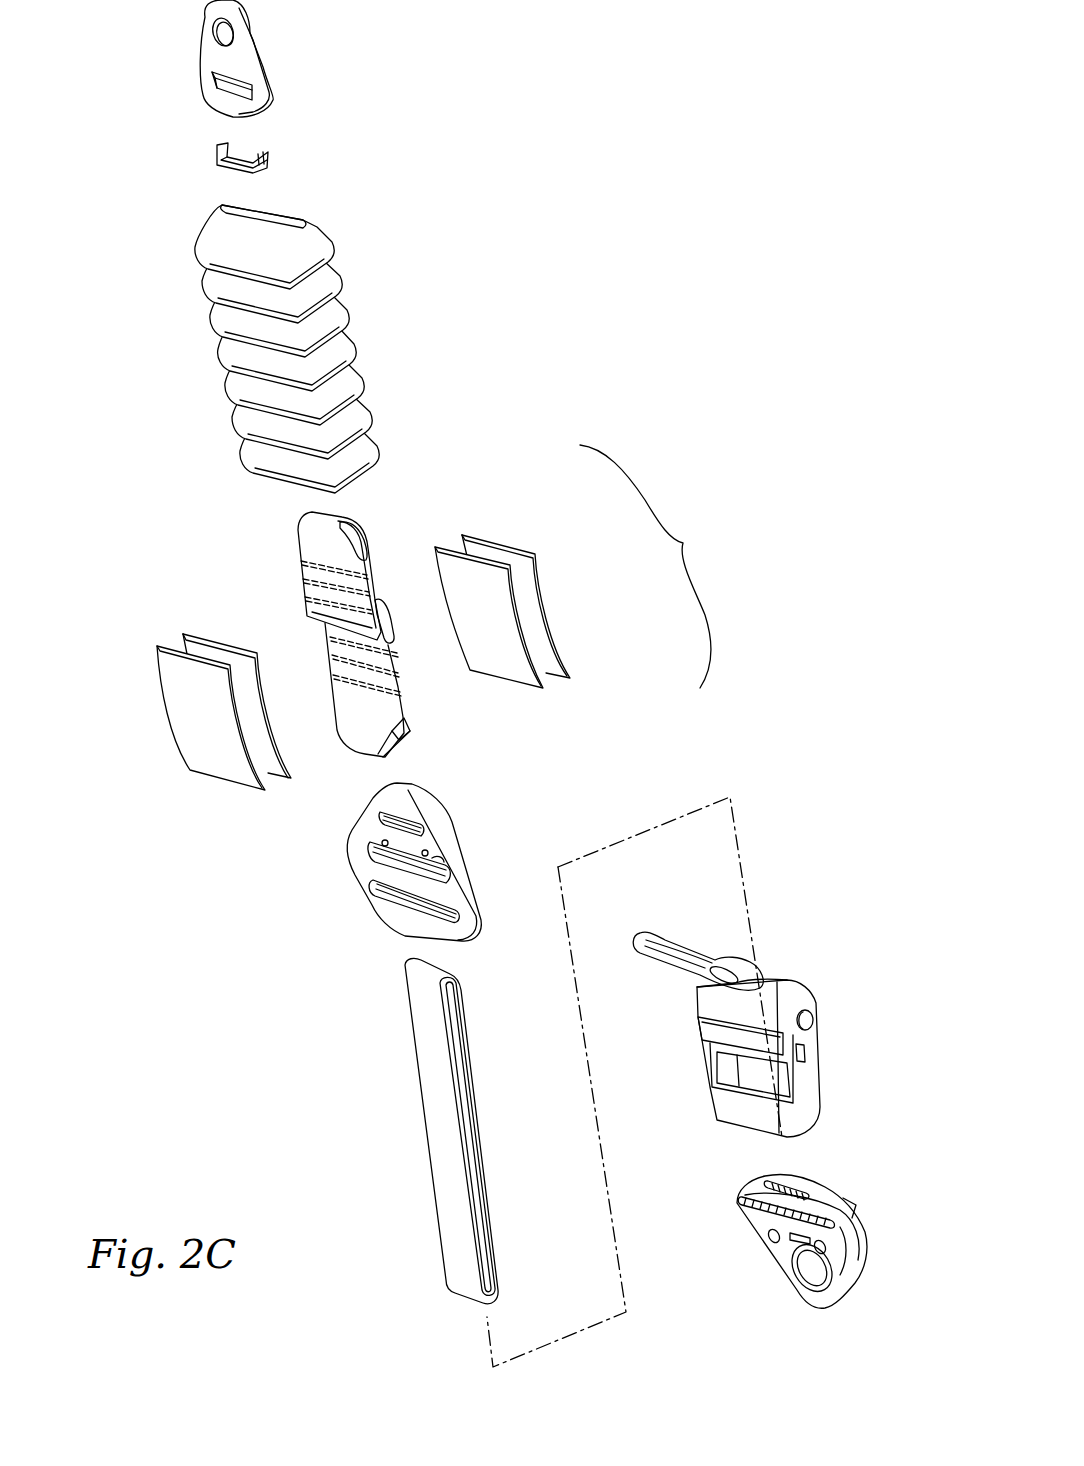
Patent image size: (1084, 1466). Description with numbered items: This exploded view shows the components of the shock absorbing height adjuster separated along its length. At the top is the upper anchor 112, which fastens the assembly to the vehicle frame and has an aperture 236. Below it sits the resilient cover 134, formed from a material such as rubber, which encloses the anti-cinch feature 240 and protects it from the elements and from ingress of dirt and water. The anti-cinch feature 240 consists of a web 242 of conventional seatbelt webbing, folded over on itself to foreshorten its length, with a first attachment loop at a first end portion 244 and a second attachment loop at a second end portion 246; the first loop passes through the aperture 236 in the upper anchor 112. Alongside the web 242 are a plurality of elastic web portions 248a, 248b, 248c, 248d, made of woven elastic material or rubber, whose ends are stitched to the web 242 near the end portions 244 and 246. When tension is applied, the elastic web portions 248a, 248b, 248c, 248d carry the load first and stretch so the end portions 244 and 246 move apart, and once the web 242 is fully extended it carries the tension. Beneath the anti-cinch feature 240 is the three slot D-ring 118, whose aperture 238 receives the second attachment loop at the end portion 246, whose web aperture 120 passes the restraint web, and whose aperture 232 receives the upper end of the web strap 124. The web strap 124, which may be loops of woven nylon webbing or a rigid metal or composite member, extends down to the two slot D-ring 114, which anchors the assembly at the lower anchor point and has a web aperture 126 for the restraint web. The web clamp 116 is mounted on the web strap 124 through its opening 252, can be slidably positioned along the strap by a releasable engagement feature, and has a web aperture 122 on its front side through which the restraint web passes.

The upper anchor 112 is at (243, 67).
The aperture 236 is at (215, 86).
The cover 134 is at (357, 392).
The anti-cinch feature 240 is at (683, 543).
The first end portion 244 is at (316, 524).
The web 242 is at (364, 674).
The second end portion 246 is at (415, 744).
The elastic web portion 248a is at (174, 704).
The elastic web portion 248b is at (188, 645).
The elastic web portion 248c is at (518, 667).
The elastic web portion 248d is at (552, 640).
The three slot D-ring 118 is at (399, 881).
The aperture 238 is at (382, 822).
The web aperture 120 is at (370, 860).
The aperture 232 is at (372, 904).
The web strap 124 is at (435, 1148).
The web aperture 122 is at (655, 965).
The opening 252 is at (810, 1021).
The web clamp 116 is at (815, 1020).
The two slot D-ring 114 is at (818, 1241).
The web aperture 126 is at (770, 1212).